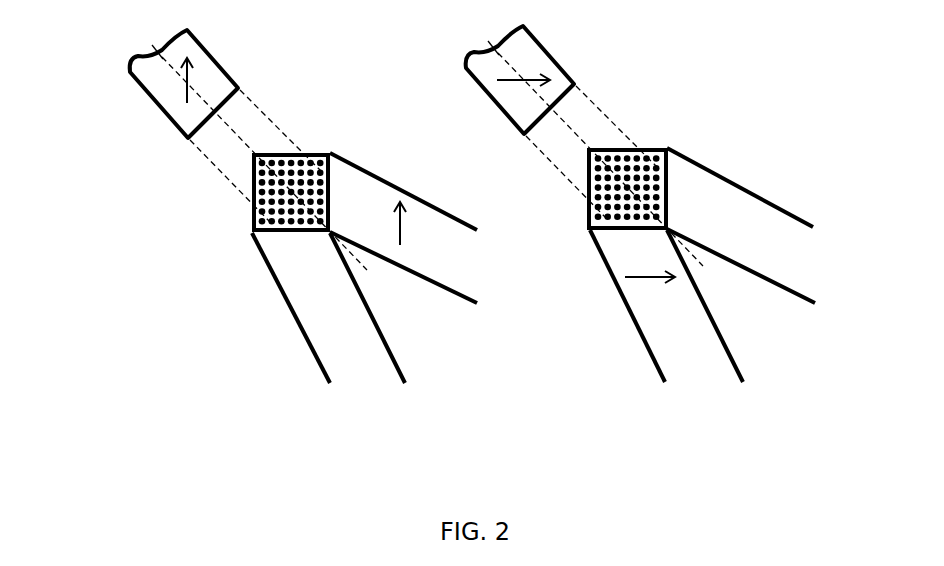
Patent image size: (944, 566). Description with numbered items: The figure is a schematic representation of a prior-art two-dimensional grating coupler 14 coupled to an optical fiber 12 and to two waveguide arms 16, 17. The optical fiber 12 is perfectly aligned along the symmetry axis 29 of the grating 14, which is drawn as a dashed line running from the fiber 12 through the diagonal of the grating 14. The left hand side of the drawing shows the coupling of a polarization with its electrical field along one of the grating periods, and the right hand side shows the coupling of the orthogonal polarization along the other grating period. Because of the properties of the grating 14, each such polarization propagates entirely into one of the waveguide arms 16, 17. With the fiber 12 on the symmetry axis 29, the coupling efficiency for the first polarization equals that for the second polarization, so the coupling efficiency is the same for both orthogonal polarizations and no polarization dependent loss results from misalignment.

The optical fiber 12 is at (178, 107).
The 2-dimensional grating coupler 14 is at (268, 232).
The waveguide arm 16 is at (353, 183).
The waveguide arm 17 is at (307, 293).
The symmetry axis 29 is at (238, 142).